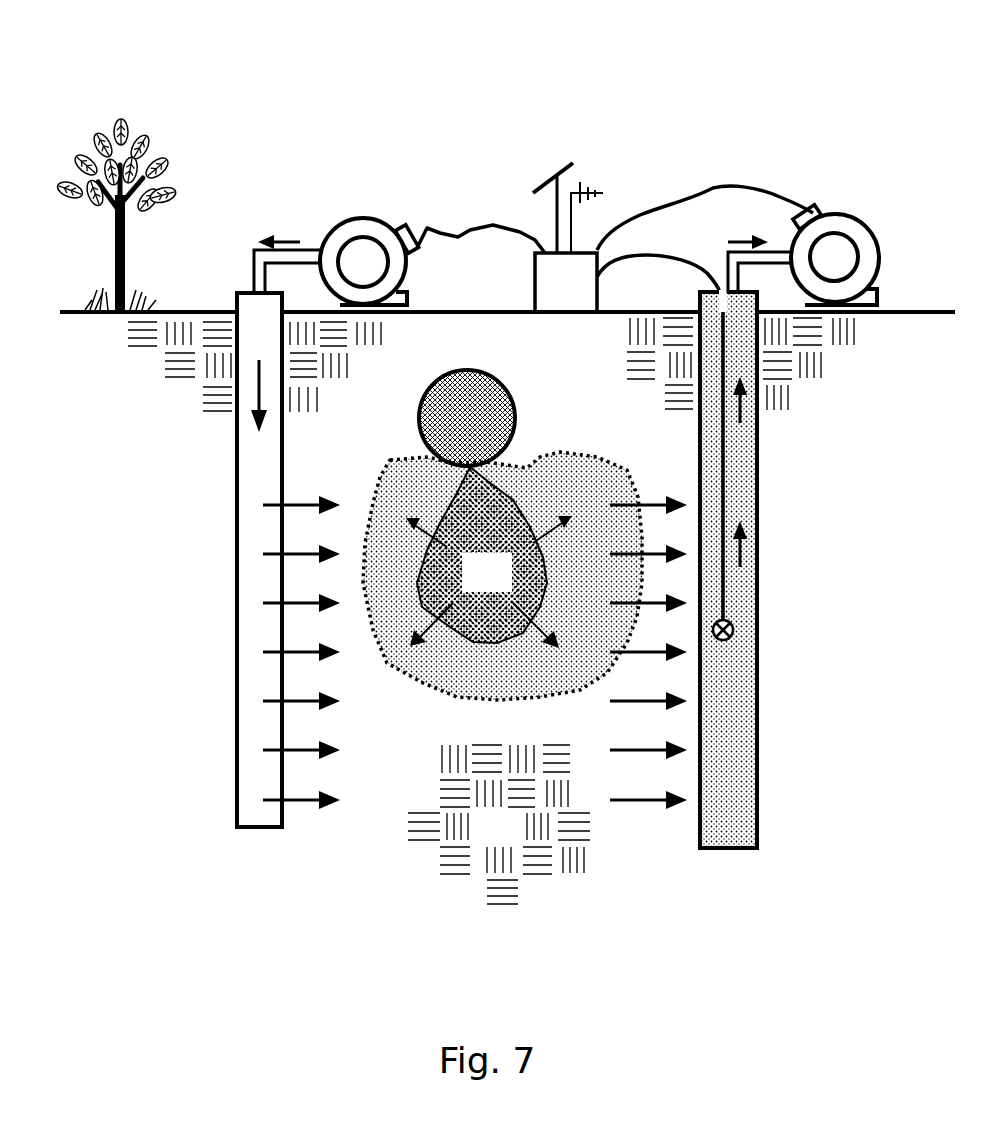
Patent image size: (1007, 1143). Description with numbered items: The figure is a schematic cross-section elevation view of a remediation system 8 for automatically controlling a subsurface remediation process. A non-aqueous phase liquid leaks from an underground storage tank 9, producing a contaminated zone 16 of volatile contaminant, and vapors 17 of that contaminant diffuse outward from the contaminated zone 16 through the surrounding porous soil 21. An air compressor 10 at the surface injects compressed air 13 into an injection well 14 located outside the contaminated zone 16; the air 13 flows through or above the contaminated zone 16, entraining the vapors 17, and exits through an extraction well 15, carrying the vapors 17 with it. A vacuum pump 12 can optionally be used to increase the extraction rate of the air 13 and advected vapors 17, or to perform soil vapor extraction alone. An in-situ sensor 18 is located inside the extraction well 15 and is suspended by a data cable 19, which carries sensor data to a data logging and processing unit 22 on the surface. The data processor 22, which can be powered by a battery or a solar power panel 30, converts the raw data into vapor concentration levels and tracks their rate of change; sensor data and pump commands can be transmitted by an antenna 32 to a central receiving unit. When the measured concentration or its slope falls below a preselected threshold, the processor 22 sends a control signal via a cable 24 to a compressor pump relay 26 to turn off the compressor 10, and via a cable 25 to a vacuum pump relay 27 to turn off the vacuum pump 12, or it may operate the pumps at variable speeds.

The remediation system 8 is at (296, 70).
The underground storage tank 9 is at (515, 403).
The air compressor 10 is at (335, 222).
The vacuum pump 12 is at (868, 222).
The compressed air 13 is at (305, 498).
The injection well 14 is at (258, 757).
The extraction well 15 is at (737, 757).
The contaminated zone 16 is at (489, 557).
The vapors 17 is at (425, 662).
The in-situ sensor 18 is at (740, 617).
The data cable 19 is at (732, 505).
The porous soil 21 is at (499, 824).
The data logging and processing unit 22 is at (566, 282).
The cable 24 is at (470, 230).
The cable 25 is at (727, 183).
The compressor pump relay 26 is at (400, 224).
The vacuum pump relay 27 is at (818, 203).
The solar power panel 30 is at (540, 176).
The antenna 32 is at (599, 178).